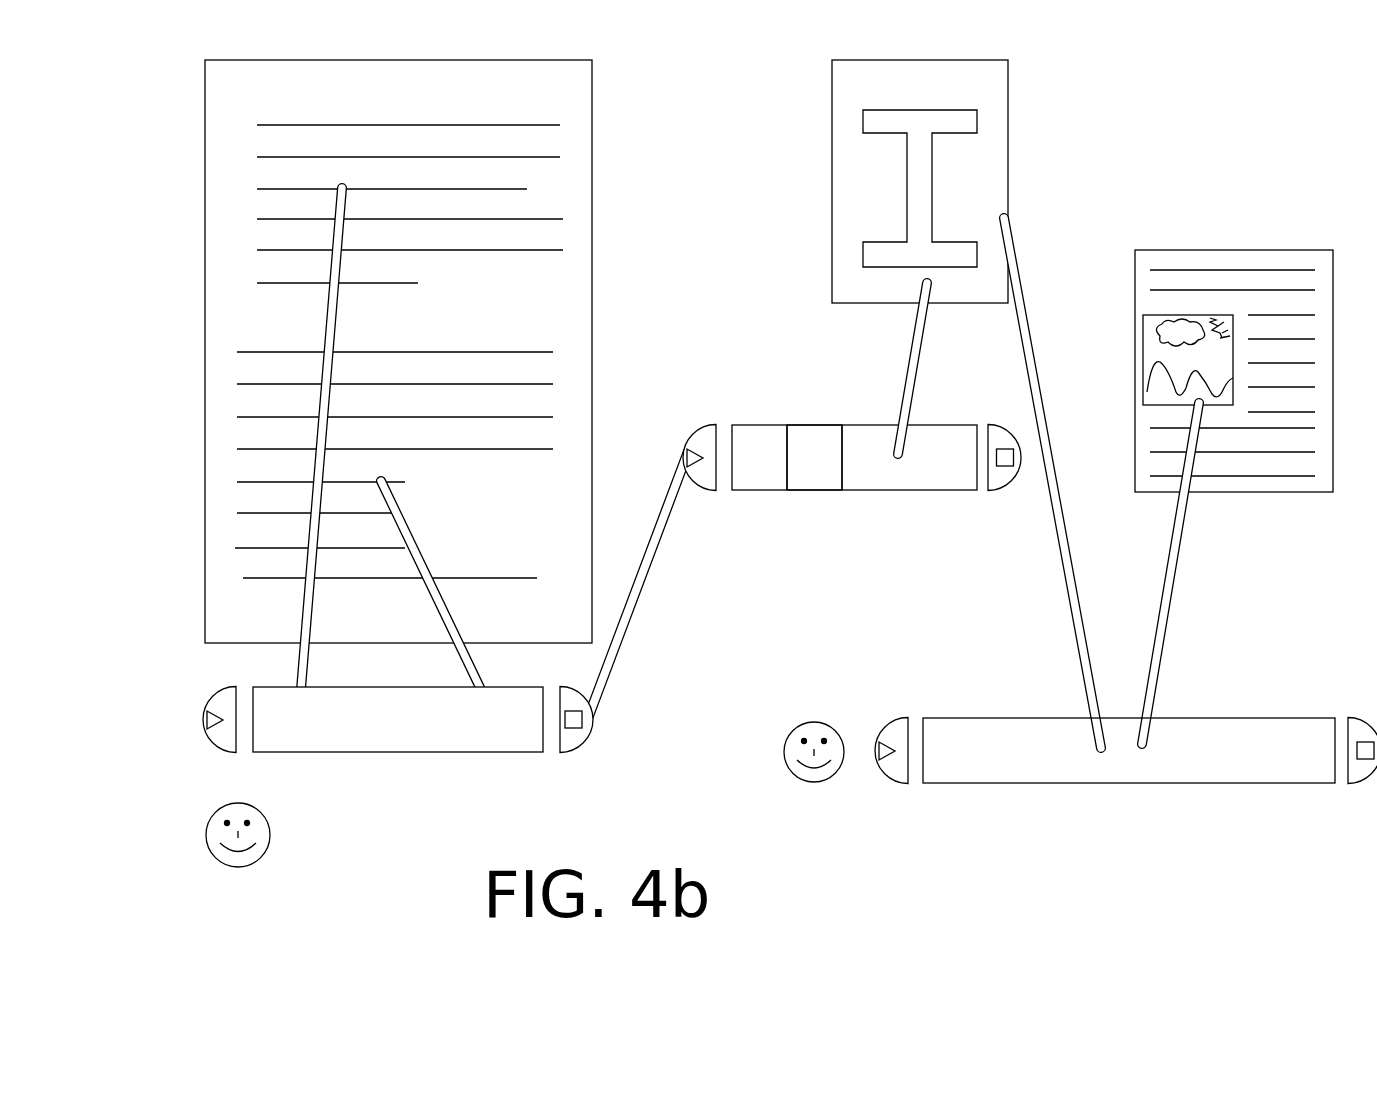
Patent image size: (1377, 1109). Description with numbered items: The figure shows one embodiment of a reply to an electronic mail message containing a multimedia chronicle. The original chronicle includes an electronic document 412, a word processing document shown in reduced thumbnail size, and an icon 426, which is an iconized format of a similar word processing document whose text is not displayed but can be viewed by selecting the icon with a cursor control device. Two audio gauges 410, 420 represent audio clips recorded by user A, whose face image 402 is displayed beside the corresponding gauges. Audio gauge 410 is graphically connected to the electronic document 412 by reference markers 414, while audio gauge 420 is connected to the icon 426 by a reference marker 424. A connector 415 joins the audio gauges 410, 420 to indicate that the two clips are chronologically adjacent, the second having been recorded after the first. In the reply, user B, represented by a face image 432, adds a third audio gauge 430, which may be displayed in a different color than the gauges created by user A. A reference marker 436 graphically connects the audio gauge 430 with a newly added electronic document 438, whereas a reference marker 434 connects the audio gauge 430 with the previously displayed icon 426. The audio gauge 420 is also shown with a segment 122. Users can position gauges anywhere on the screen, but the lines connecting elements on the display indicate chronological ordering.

The display segment 122 is at (809, 425).
The face image 402 is at (233, 877).
The audio gauge 410 is at (379, 764).
The electronic document 412 is at (600, 285).
The reference markers 414 is at (307, 672).
The connector 415 is at (645, 592).
The audio gauge 420 is at (906, 514).
The reference marker 424 is at (915, 383).
The icon 426 is at (1008, 180).
The third audio gauge 430 is at (1149, 802).
The user B 432 is at (814, 796).
The reference marker 434 is at (1065, 567).
The reference marker 436 is at (1180, 542).
The electronic document 438 is at (1300, 493).